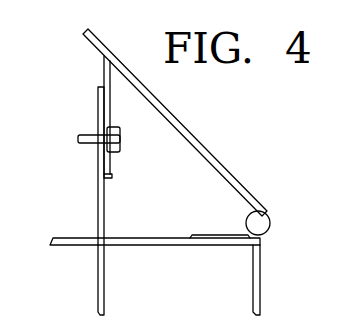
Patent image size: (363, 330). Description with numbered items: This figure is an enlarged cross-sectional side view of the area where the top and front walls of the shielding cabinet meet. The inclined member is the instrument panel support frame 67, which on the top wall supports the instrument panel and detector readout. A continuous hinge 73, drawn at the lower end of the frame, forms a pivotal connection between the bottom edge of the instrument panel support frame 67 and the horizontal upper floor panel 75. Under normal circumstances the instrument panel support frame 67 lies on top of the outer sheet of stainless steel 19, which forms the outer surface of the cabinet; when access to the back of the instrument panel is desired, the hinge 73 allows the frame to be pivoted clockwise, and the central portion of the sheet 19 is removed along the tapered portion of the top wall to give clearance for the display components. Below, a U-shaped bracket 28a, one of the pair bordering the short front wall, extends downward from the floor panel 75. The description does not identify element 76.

The outer sheet of stainless steel 19 is at (95, 47).
The instrument panel support frame 67 is at (190, 123).
The continuous hinge 73 is at (247, 221).
The upper floor panel 75 is at (165, 238).
The rail end 76 is at (75, 237).
The U-shaped bracket 28a is at (252, 271).